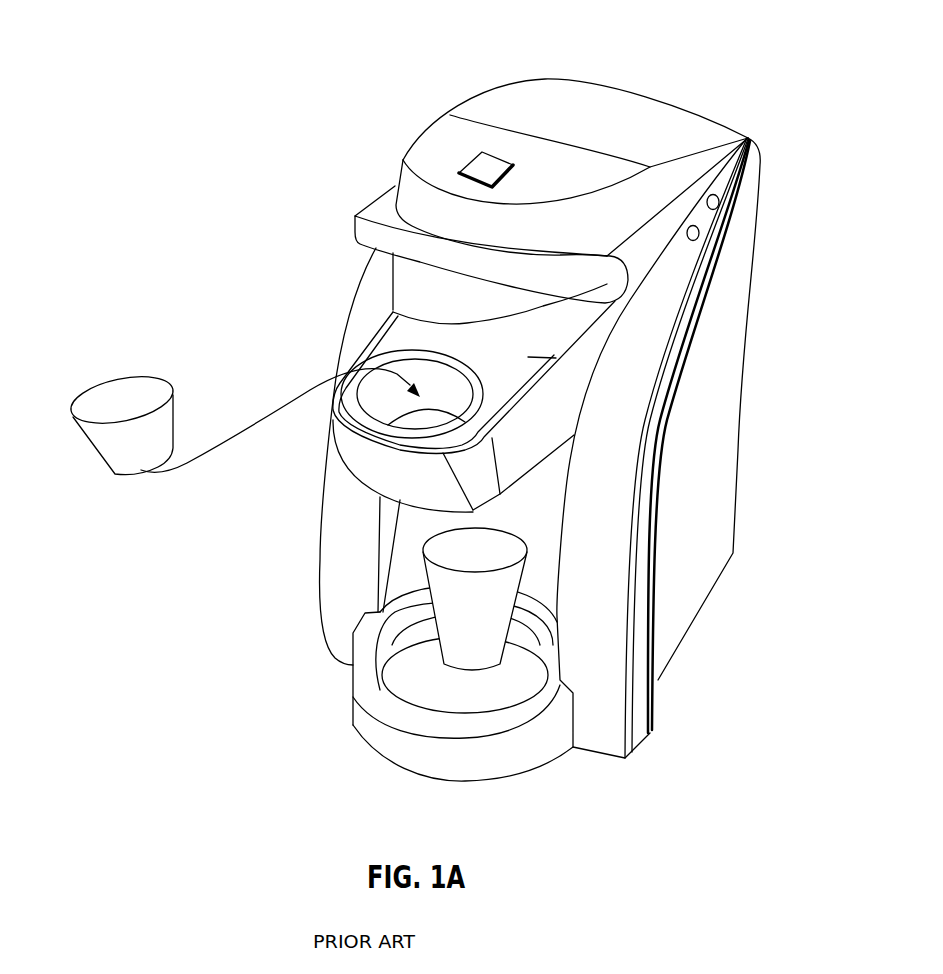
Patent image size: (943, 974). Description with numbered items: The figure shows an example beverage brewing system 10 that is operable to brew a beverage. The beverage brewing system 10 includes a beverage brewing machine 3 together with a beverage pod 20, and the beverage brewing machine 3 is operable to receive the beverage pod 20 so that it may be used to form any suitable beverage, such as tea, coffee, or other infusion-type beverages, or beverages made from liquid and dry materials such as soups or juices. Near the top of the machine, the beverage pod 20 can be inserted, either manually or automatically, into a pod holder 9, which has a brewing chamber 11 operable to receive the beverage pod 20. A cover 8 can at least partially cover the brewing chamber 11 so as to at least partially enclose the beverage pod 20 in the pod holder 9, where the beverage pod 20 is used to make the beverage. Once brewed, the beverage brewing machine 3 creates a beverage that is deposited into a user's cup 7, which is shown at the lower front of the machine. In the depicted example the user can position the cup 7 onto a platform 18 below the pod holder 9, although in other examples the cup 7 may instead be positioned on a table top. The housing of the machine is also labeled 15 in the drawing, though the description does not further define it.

The beverage brewing system 10 is at (216, 36).
The beverage brewing machine 3 is at (373, 211).
The cover 8 is at (545, 304).
The pod holder 9 is at (314, 325).
The brewing chamber 11 is at (378, 405).
The housing 15 is at (723, 453).
The beverage pod 20 is at (100, 447).
The cup 7 is at (352, 702).
The platform 18 is at (418, 687).